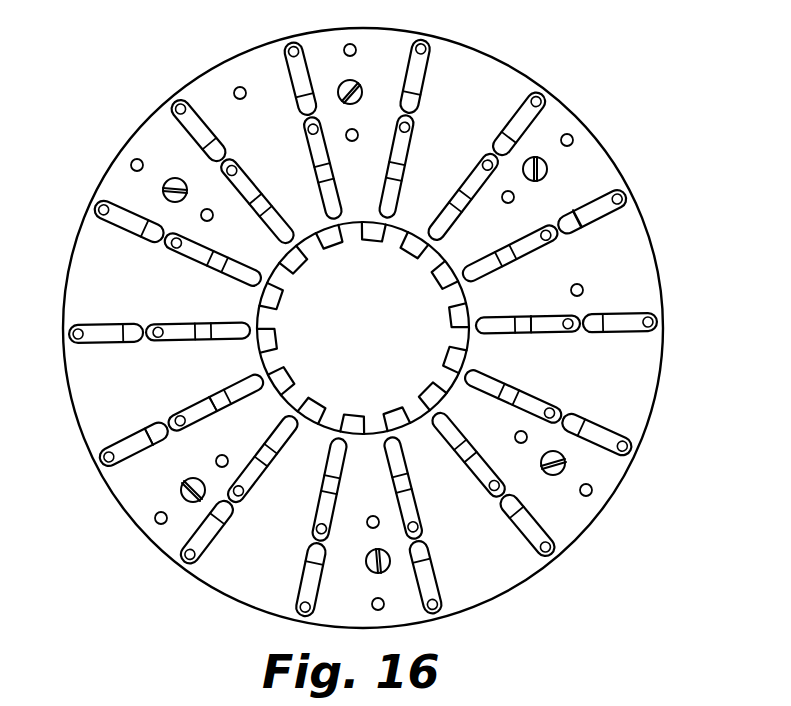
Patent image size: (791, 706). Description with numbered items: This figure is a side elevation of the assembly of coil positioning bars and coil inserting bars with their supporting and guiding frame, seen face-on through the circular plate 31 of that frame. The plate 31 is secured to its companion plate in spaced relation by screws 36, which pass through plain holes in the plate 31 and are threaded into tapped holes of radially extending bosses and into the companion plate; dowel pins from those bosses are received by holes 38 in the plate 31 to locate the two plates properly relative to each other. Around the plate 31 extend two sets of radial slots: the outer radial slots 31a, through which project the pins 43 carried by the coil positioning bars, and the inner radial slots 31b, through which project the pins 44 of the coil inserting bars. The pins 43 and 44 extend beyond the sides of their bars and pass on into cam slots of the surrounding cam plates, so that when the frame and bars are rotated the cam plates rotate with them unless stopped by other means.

The plate 31 is at (655, 255).
The radial slots 31a is at (143, 442).
The radial slots 31b is at (212, 402).
The screws 36 is at (362, 95).
The holes 38 is at (357, 51).
The pin 43 is at (423, 48).
The pin 44 is at (483, 165).